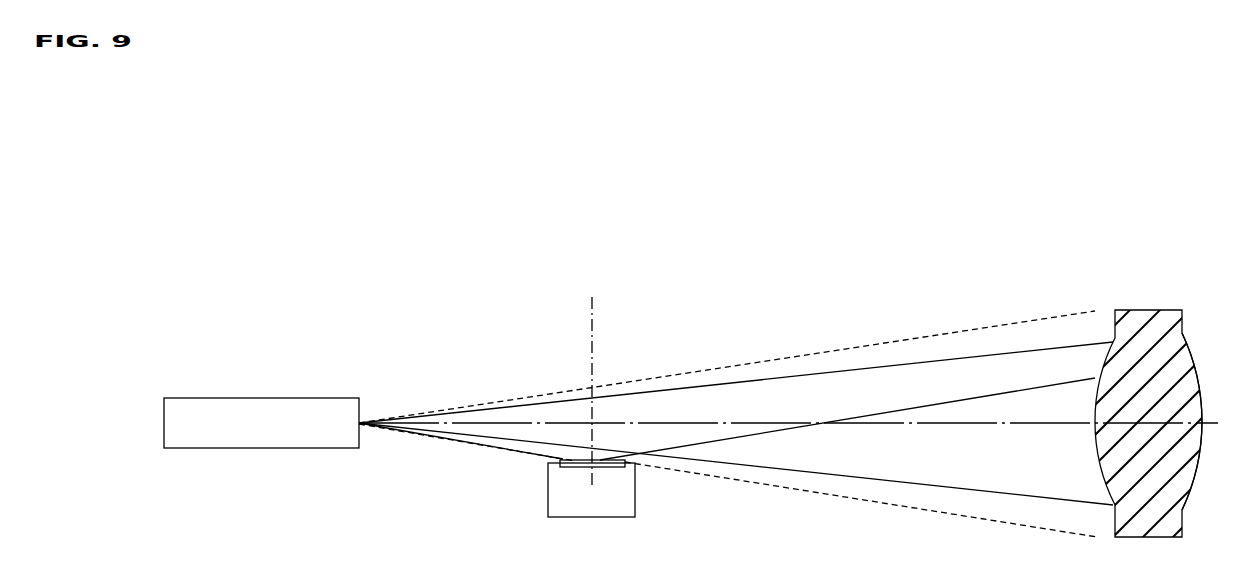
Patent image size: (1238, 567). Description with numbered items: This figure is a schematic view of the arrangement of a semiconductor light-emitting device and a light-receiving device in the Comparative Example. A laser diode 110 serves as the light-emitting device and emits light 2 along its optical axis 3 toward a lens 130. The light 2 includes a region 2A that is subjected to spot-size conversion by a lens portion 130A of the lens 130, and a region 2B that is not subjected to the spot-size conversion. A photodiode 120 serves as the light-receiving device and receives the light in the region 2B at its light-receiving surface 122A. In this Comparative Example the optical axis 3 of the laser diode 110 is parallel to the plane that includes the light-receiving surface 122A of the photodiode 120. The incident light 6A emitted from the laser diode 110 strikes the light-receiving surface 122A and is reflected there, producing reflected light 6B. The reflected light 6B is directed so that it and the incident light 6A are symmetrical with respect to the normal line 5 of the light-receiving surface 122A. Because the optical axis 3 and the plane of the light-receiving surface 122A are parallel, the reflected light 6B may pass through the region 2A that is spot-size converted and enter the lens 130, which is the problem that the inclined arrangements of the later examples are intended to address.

The laser diode 110 is at (261, 410).
The photodiode 120 is at (580, 505).
The light-receiving surface 122A is at (633, 465).
The lens 130 is at (1150, 322).
The lens portion 130A is at (1195, 370).
The normal line 5 is at (591, 320).
The optical axis 3 is at (641, 424).
The incident light 6A is at (454, 432).
The reflected light 6B is at (903, 408).
The light 2 is at (736, 359).
The region subjected to spot-size conversion 2A is at (733, 392).
The region not subjected to spot-size conversion 2B is at (712, 326).